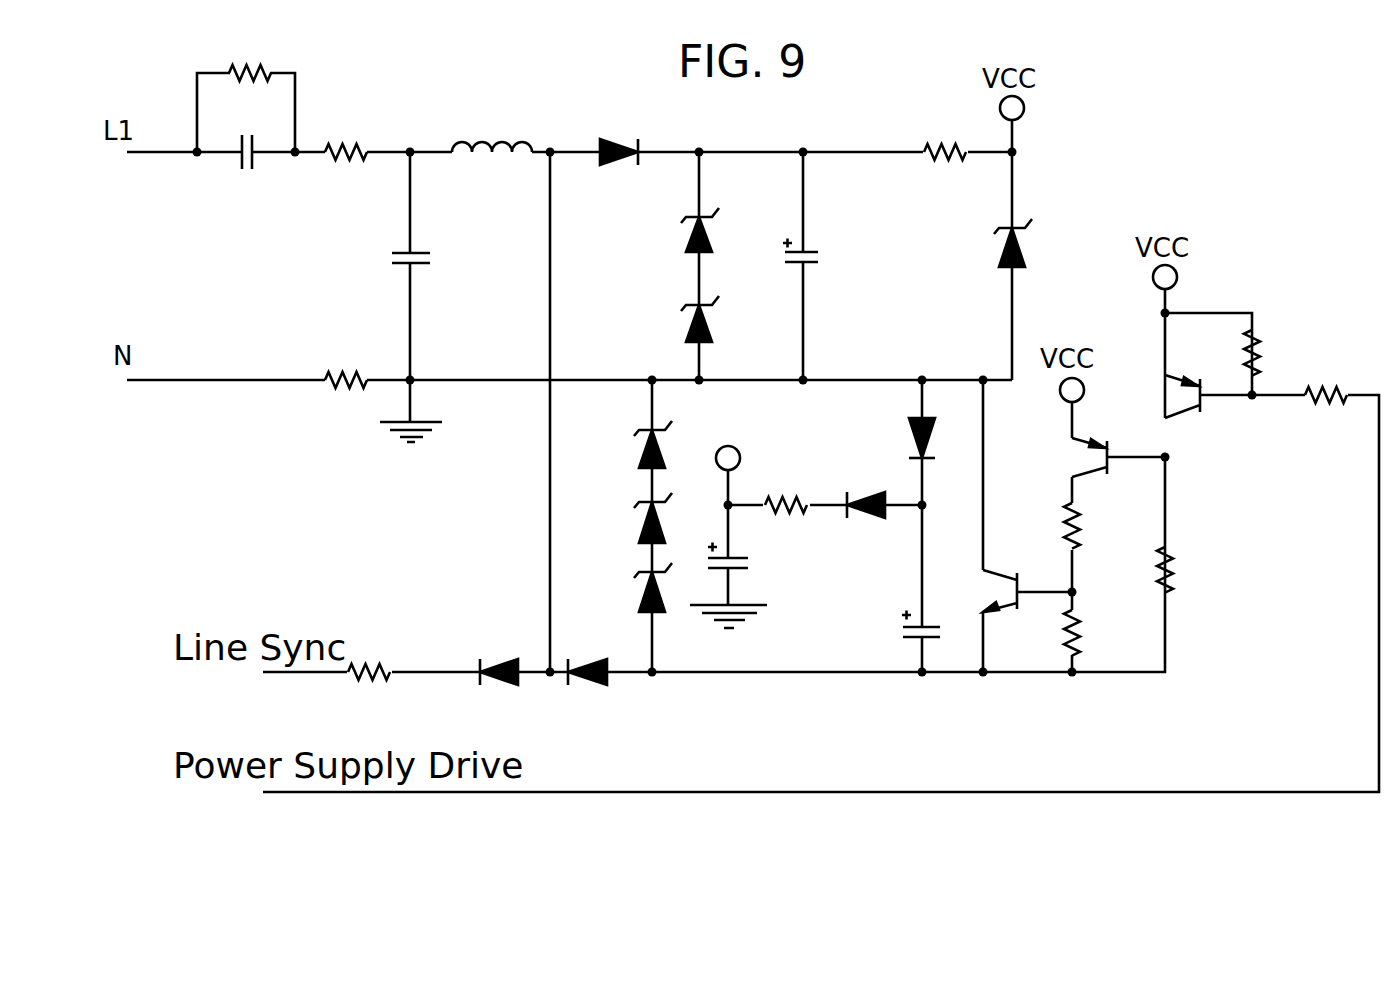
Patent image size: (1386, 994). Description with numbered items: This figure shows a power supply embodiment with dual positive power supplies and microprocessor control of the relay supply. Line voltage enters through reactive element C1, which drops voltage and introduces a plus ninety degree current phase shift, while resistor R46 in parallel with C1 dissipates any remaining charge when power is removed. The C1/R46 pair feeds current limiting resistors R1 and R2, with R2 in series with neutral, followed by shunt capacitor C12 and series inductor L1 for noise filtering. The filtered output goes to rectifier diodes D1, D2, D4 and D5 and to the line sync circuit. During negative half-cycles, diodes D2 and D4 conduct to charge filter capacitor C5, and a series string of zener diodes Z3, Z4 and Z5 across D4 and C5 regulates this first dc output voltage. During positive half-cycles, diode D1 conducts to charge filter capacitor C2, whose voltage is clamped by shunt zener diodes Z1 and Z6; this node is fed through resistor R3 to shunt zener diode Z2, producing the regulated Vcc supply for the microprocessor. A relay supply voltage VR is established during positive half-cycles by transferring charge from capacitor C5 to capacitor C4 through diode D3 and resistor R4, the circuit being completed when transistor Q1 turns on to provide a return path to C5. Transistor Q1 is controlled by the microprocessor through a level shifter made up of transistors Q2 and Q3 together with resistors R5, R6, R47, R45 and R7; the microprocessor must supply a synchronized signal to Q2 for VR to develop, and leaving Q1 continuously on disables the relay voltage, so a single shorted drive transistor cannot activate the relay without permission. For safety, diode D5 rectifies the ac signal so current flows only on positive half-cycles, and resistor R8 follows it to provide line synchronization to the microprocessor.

The resistor R46 is at (250, 56).
The reactive element C1 is at (246, 170).
The current limiting resistor R1 is at (346, 168).
The series inductor L1 is at (492, 166).
The shunt capacitor C12 is at (437, 258).
The current limiting resistor R2 is at (346, 364).
The rectifier diode D1 is at (620, 168).
The shunt zener diode Z1 is at (682, 230).
The shunt zener diode Z6 is at (682, 319).
The filter capacitor C2 is at (823, 257).
The resistor R3 is at (945, 169).
The shunt zener diode Z2 is at (995, 243).
The zener diode Z3 is at (636, 444).
The zener diode Z4 is at (636, 518).
The zener diode Z5 is at (636, 587).
The relay supply voltage VR is at (726, 443).
The resistor R4 is at (787, 490).
The diode D3 is at (868, 524).
The rectifier diode D4 is at (901, 438).
The capacitor C4 is at (750, 563).
The filter capacitor C5 is at (904, 630).
The resistor R8 is at (369, 656).
The rectifier diode D5 is at (502, 691).
The rectifier diode D2 is at (589, 691).
The transistor Q1 is at (989, 591).
The transistor Q2 is at (1171, 396).
The transistor Q3 is at (1078, 457).
The resistor R5 is at (1098, 526).
The resistor R6 is at (1098, 633).
The resistor R47 is at (1195, 570).
The resistor R45 is at (1278, 353).
The resistor R7 is at (1330, 415).